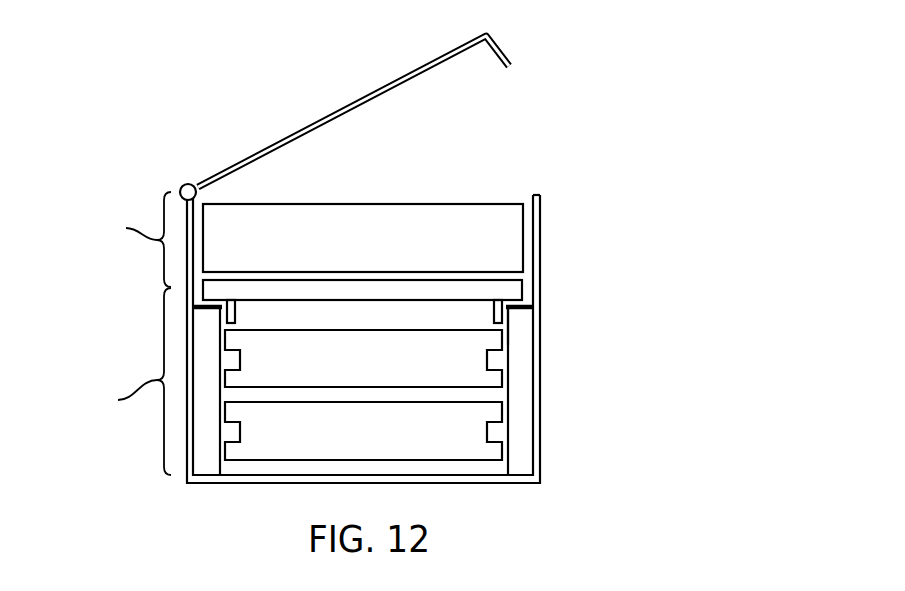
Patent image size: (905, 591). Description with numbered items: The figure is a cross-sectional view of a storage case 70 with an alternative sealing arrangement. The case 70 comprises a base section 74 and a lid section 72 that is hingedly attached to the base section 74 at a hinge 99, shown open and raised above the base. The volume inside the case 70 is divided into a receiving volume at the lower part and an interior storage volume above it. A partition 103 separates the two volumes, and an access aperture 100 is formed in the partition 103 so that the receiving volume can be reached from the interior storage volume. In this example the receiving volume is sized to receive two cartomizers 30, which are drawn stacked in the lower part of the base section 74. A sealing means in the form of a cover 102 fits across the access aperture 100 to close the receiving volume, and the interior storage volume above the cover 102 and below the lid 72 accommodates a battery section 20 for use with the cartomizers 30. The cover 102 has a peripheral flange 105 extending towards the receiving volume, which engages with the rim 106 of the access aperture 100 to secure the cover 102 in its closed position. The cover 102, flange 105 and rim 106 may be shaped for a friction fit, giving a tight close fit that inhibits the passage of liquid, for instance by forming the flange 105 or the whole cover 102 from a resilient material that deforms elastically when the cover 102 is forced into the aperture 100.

The case 70 is at (396, 243).
The lid section 72 is at (437, 53).
The base section 74 is at (542, 438).
The hinge pivot 99 is at (183, 186).
The battery section 20 is at (349, 253).
The cartomizers 30 is at (349, 370).
The access aperture 100 is at (467, 315).
The sealing means (cover) 102 is at (505, 292).
The partition 103 is at (210, 309).
The peripheral flange 105 is at (228, 318).
The rim 106 is at (512, 310).